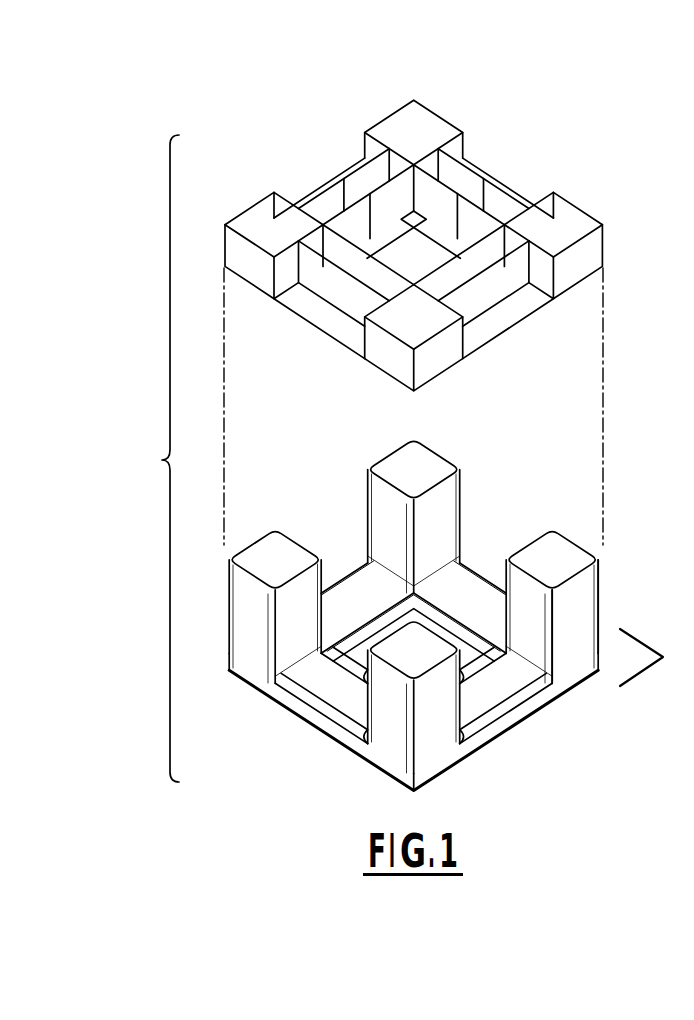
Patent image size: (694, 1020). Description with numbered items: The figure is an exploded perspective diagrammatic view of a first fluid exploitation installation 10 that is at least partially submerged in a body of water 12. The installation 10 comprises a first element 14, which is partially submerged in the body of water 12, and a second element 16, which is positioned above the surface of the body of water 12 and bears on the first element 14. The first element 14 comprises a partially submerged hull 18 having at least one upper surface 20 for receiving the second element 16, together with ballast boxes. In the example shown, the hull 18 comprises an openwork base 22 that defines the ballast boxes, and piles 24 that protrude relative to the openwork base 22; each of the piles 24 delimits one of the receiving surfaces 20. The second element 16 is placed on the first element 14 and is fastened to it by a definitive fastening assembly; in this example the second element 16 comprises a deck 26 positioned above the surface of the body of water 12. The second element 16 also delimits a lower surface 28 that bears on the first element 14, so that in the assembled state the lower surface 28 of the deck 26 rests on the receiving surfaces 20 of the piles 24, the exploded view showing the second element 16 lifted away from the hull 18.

The installation 10 is at (529, 142).
The body of water 12 is at (634, 666).
The first element 14 is at (559, 763).
The second element 16 is at (593, 180).
The hull 18 is at (346, 755).
The upper surface 20 is at (400, 455).
The openwork base 22 is at (505, 688).
The piles 24 is at (582, 603).
The deck 26 is at (447, 117).
The lower surface 28 is at (578, 287).